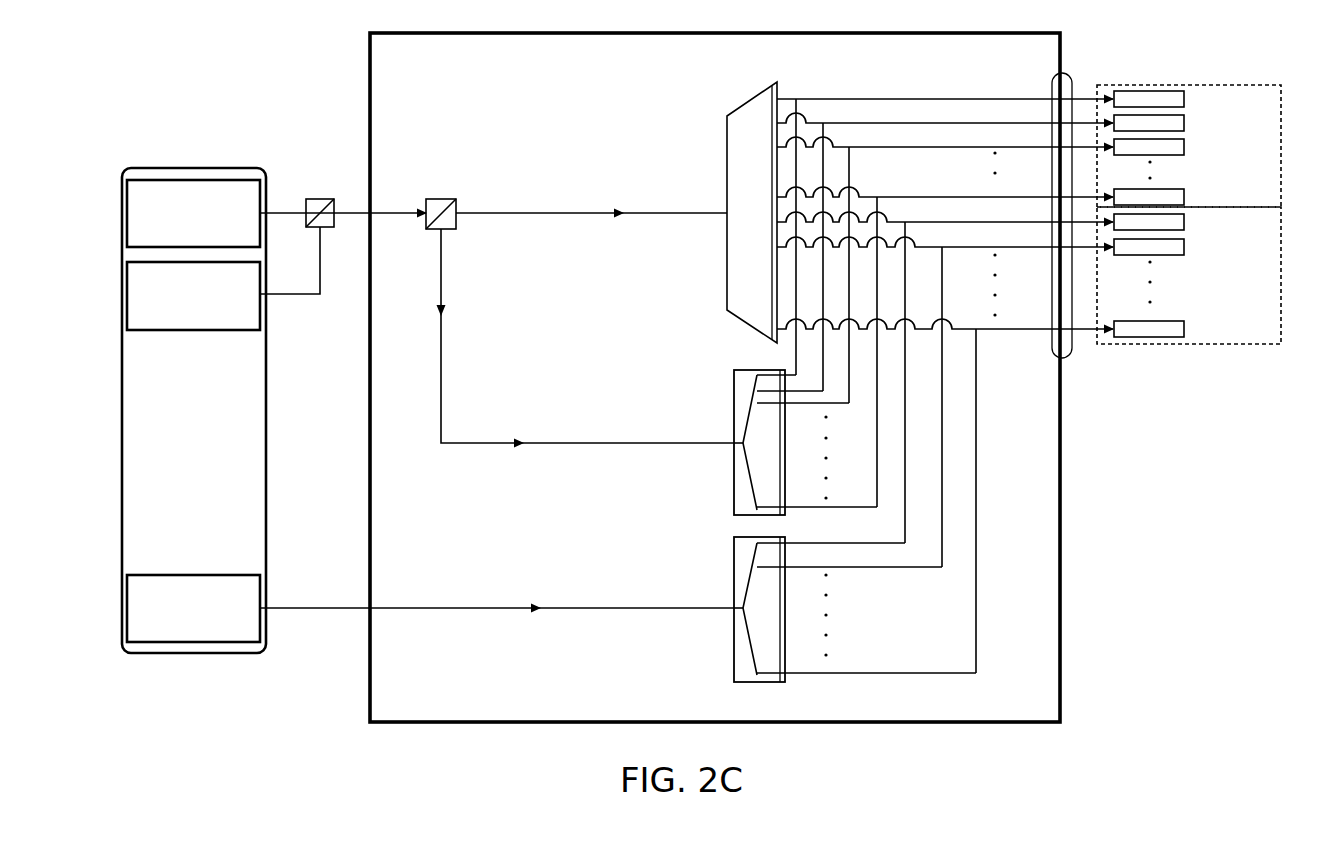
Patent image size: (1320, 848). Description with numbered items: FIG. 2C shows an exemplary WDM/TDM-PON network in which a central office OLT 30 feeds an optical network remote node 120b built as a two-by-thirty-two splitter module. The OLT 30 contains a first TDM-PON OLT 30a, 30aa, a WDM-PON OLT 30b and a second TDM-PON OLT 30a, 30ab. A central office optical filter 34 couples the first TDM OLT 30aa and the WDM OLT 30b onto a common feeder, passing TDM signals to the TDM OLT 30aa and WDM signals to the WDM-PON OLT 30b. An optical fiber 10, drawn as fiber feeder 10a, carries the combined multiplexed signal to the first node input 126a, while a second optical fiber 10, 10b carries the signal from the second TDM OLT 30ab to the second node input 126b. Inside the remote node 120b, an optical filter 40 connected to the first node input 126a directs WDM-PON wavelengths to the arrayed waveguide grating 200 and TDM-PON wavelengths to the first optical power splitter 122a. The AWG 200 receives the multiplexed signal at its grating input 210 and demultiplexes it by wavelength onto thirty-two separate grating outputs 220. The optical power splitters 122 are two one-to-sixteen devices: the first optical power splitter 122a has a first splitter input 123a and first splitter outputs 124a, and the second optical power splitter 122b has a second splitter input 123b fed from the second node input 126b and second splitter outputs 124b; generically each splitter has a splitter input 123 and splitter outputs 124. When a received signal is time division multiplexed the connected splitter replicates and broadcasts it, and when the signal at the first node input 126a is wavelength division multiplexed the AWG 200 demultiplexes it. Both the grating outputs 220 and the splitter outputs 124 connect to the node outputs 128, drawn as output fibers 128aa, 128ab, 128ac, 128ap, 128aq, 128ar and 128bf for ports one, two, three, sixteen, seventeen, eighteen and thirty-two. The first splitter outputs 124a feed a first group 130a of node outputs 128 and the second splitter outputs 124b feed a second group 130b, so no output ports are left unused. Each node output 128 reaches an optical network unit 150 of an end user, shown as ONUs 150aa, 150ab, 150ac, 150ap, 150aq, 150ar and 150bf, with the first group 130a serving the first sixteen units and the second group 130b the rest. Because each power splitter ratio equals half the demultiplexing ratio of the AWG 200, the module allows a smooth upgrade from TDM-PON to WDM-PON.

The optical line terminal 30 is at (183, 168).
The G-PON OLT 30a is at (232, 194).
The first TDM OLT 30aa is at (238, 180).
The second TDM OLT 30ab is at (148, 575).
The WDM OLT 30b is at (137, 331).
The central office optical filter 34 is at (314, 228).
The first node input 126a is at (362, 212).
The second node input 126b is at (362, 607).
The optical fiber 10 is at (343, 253).
The fiber feeder 10a is at (352, 214).
The second optical fiber feed 10b is at (313, 609).
The optical filter 40 is at (441, 199).
The optical network remote node 120b is at (700, 33).
The arrayed waveguide grating 200 is at (727, 137).
The grating input 210 is at (727, 221).
The grating outputs 220 is at (777, 95).
The optical power splitter 122 is at (739, 451).
The first optical power splitter 122a is at (739, 451).
The second optical power splitter 122b is at (783, 617).
The splitter input 123 is at (739, 451).
The first splitter input 123a is at (739, 451).
The second splitter input 123b is at (783, 617).
The splitter outputs 124 is at (739, 451).
The first splitter outputs 124a is at (734, 385).
The second splitter outputs 124b is at (734, 550).
The node outputs 128 is at (945, 373).
The node output 128aa is at (1052, 99).
The node output 128ab is at (1052, 123).
The node output 128ac is at (1052, 147).
The node output 128ap is at (1052, 197).
The node output 128aq is at (1052, 222).
The node output 128ar is at (1052, 247).
The node output 128bf is at (1052, 329).
The first group of node outputs 130a is at (1183, 85).
The second group of node outputs 130b is at (1181, 345).
The optical network unit 150 is at (1196, 214).
The ONU 1 150aa is at (1184, 101).
The ONU 2 150ab is at (1184, 125).
The ONU 3 150ac is at (1184, 149).
The ONU 16 150ap is at (1170, 192).
The ONU 17 150aq is at (1184, 224).
The ONU 18 150ar is at (1184, 249).
The ONU 32 150bf is at (1184, 331).